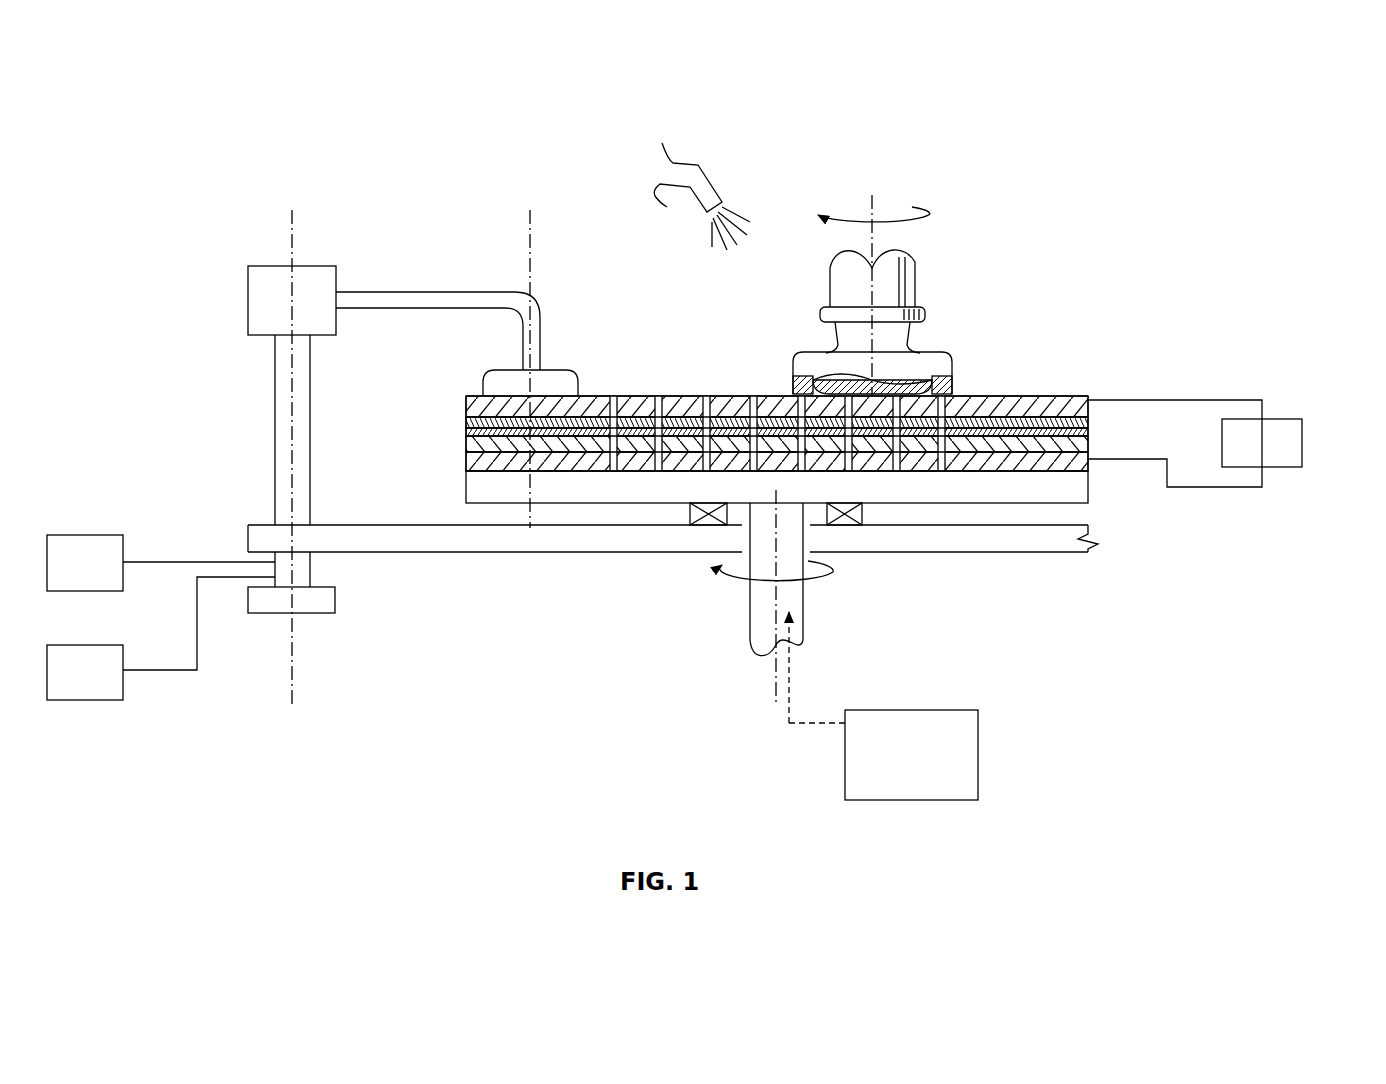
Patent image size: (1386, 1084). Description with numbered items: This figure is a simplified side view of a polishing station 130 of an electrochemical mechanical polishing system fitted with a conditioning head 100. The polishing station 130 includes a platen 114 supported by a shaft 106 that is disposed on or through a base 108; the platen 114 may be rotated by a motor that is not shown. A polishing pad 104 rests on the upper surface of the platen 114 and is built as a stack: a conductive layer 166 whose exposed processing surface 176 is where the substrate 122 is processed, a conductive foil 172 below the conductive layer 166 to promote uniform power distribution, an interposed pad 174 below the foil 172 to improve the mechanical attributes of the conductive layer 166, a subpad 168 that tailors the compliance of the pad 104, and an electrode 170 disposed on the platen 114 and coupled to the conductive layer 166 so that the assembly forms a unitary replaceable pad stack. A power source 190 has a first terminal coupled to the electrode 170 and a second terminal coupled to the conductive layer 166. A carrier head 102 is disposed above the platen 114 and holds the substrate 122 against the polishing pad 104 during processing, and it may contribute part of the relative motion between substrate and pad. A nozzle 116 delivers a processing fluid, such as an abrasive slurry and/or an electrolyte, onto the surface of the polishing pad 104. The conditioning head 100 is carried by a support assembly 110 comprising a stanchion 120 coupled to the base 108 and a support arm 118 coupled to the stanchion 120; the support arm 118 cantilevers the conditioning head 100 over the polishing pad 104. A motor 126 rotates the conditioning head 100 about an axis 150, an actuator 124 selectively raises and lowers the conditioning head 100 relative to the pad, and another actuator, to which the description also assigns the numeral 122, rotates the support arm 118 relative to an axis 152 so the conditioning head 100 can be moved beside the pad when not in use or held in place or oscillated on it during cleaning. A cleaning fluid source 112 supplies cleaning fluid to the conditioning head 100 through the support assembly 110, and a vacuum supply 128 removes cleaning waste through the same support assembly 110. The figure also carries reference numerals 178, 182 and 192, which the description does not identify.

The conditioning head 100 is at (560, 345).
The carrier head 102 is at (940, 352).
The polishing pad 104 is at (789, 436).
The shaft 106 is at (757, 613).
The base 108 is at (248, 537).
The support assembly 110 is at (185, 235).
The cleaning fluid source 112 is at (105, 576).
The platen 114 is at (965, 488).
The nozzle 116 is at (712, 181).
The support arm 118 is at (440, 292).
The stanchion 120 is at (275, 396).
The substrate 122 is at (905, 380).
The actuator 124 is at (258, 613).
The motor 126 is at (248, 298).
The vacuum supply 128 is at (105, 685).
The polishing station 130 is at (403, 230).
The axis 150 is at (532, 265).
The axis 152 is at (290, 232).
The conductive layer 166 is at (978, 398).
The subpad 168 is at (1090, 440).
The electrode 170 is at (1088, 462).
The conductive foil 172 is at (1090, 413).
The interposed pad 174 is at (470, 437).
The processing surface 176 is at (688, 398).
The grooves 178 is at (612, 405).
The sweep direction 182 is at (428, 172).
The power source 190 is at (1302, 443).
The motor controller 192 is at (978, 722).